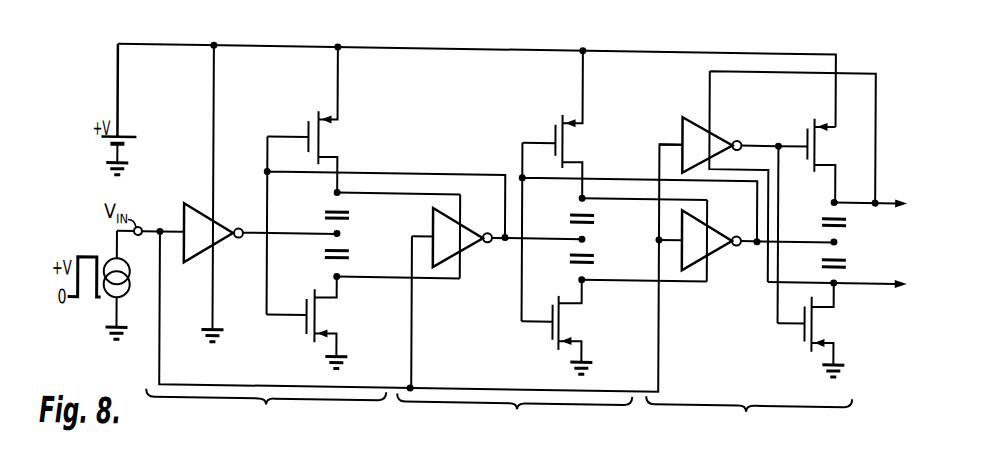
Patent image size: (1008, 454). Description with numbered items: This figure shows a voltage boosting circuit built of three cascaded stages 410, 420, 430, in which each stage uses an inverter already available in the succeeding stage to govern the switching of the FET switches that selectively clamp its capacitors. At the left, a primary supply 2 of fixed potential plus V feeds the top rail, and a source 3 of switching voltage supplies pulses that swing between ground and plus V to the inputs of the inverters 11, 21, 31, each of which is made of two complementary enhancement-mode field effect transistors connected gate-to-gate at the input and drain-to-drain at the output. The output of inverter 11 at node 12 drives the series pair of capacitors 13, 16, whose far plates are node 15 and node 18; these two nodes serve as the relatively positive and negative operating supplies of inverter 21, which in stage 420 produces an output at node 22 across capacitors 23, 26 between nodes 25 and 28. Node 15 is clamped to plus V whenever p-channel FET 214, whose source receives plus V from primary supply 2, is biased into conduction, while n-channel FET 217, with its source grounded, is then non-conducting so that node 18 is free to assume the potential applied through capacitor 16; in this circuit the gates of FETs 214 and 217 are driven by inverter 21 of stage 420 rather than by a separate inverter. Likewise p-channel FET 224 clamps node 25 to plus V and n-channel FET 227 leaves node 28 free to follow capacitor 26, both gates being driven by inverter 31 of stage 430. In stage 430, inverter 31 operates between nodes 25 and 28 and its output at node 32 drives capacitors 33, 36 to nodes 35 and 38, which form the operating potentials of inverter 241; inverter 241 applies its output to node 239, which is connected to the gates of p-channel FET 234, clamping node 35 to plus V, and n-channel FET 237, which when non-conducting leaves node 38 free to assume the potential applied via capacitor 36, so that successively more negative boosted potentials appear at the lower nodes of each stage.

The primary supply 2 is at (103, 143).
The source of switching voltage 3 is at (133, 292).
The inverter 11 is at (234, 205).
The output node of inverter 11 12 is at (344, 236).
The capacitor 13 is at (324, 216).
The node 15 is at (335, 195).
The capacitor 16 is at (324, 257).
The node 18 is at (340, 282).
The inverter 21 is at (466, 223).
The output node of inverter 21 22 is at (590, 239).
The capacitor 23 is at (570, 216).
The node 25 is at (580, 197).
The capacitor 26 is at (570, 258).
The node 28 is at (585, 281).
The inverter 31 is at (720, 227).
The output node of inverter 31 32 is at (838, 239).
The capacitor 33 is at (822, 214).
The node 35 is at (832, 198).
The capacitor 36 is at (822, 259).
The node 38 is at (838, 280).
The enhancement-mode p-channel field effect transistor 214 is at (360, 153).
The enhancement-mode n-channel field effect transistor 217 is at (356, 334).
The enhancement-mode p-channel field effect transistor 224 is at (606, 152).
The enhancement-mode n-channel field effect transistor 227 is at (604, 332).
The enhancement-mode p-channel field effect transistor 234 is at (862, 155).
The enhancement-mode n-channel field effect transistor 237 is at (858, 334).
The node 239 is at (778, 141).
The inverter 241 is at (686, 120).
The voltage boosting stage 410 is at (266, 416).
The voltage boosting stage 420 is at (514, 420).
The voltage boosting stage 430 is at (749, 422).